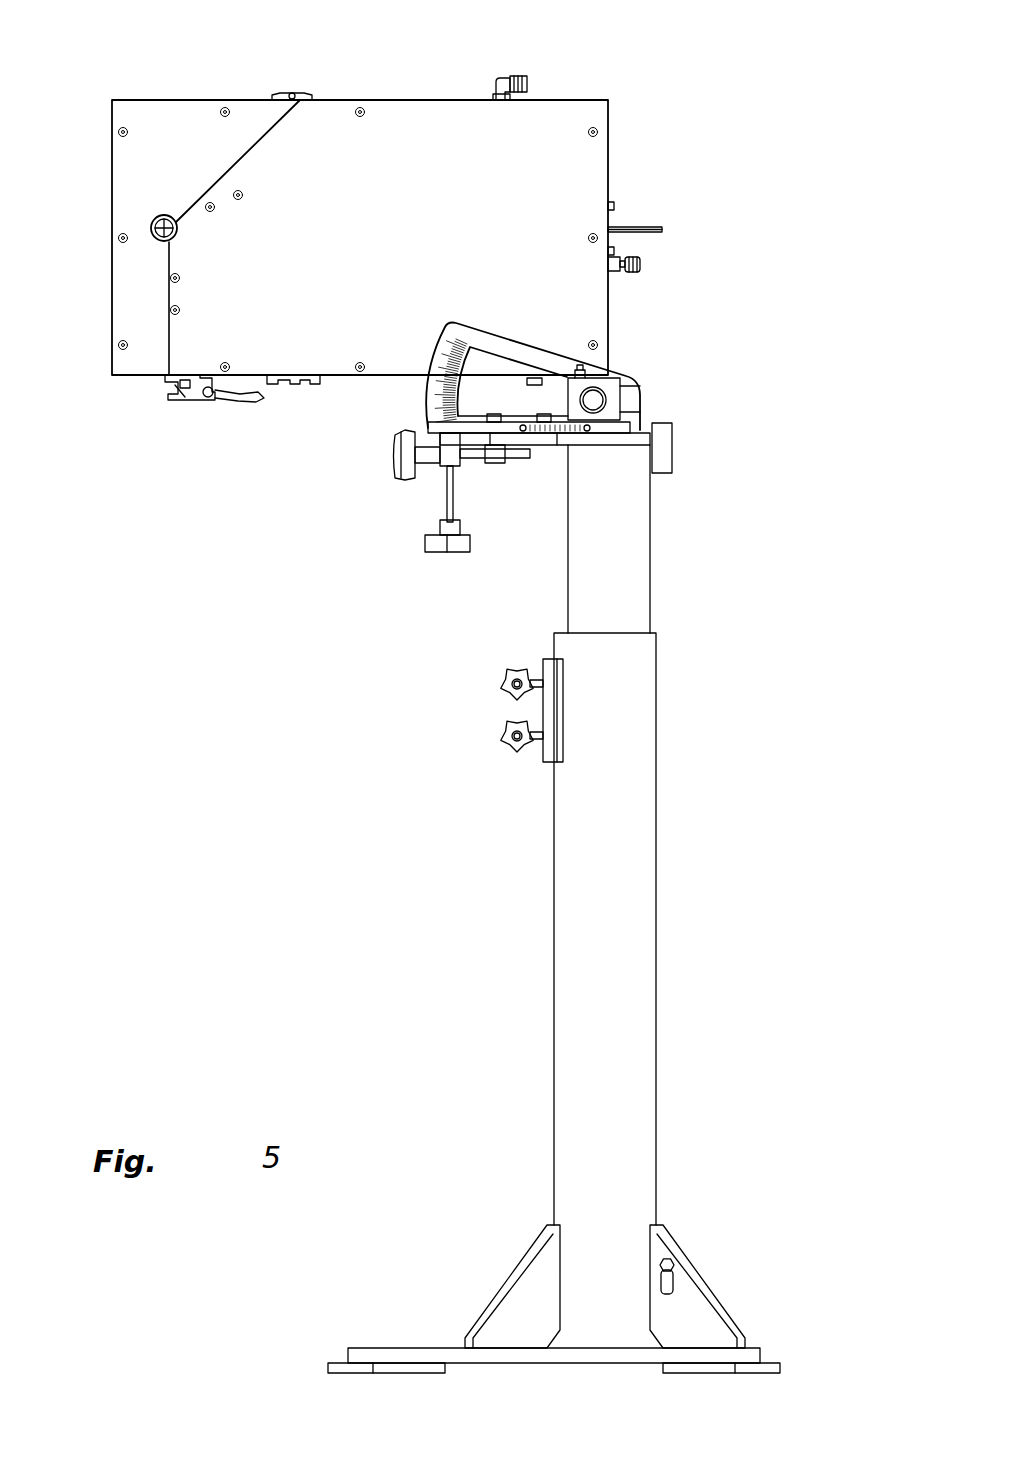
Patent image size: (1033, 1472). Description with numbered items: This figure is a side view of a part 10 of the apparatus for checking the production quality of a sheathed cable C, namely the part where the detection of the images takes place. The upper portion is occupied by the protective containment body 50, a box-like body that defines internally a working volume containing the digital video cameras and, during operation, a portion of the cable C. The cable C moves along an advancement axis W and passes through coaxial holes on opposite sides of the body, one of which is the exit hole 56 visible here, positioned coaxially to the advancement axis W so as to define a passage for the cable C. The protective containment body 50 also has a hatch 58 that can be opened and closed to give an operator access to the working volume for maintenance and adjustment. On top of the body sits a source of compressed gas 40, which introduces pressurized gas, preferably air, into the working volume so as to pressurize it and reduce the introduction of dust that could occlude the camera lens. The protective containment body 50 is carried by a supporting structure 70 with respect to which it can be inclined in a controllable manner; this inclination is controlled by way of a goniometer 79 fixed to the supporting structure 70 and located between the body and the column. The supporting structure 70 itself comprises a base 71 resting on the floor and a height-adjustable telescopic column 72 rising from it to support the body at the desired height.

The part of the apparatus 10 is at (713, 155).
The source of compressed gas 40 is at (520, 70).
The protective containment body 50 is at (417, 100).
The exit hole 56 is at (155, 237).
The hatch 58 is at (143, 358).
The supporting structure 70 is at (576, 907).
The base 71 is at (752, 1358).
The height-adjustable telescopic column 72 is at (620, 890).
The goniometer 79 is at (504, 347).
The cable C is at (157, 225).
The advancement axis W is at (170, 216).